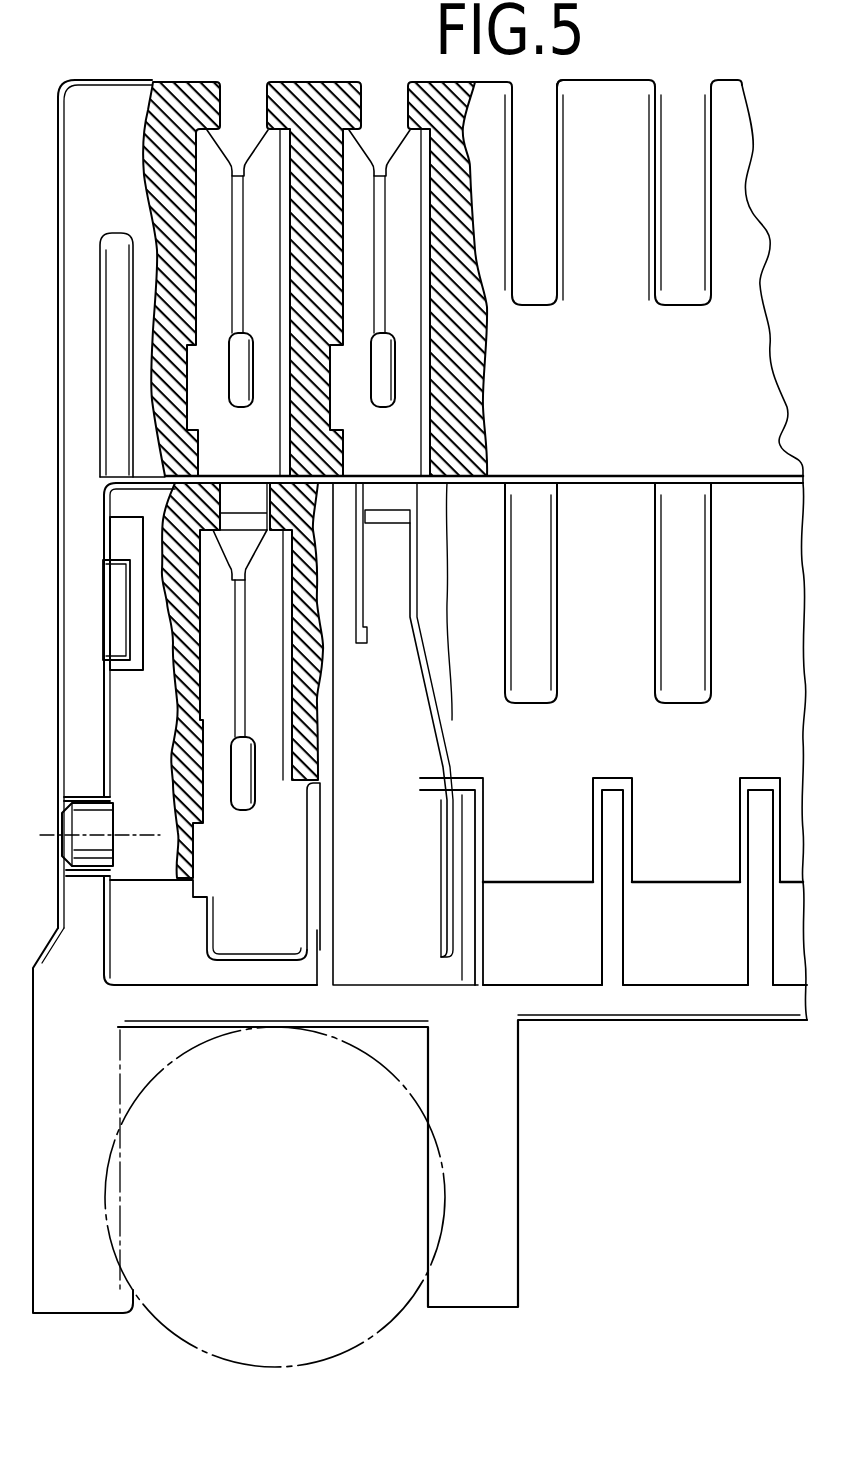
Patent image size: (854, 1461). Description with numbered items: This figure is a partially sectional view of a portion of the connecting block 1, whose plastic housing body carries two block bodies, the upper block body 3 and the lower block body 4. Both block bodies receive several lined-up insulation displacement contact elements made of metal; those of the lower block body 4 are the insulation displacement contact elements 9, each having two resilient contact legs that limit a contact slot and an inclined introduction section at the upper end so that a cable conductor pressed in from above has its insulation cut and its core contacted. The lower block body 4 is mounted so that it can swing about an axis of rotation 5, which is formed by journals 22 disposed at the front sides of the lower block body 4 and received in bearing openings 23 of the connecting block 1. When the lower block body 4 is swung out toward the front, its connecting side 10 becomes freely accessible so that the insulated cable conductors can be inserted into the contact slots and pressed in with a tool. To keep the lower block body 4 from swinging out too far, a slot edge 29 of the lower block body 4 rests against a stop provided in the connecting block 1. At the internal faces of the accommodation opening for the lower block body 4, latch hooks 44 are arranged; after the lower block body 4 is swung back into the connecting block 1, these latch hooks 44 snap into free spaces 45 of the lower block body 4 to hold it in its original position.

The connecting block 1 is at (85, 382).
The block body 3 is at (614, 97).
The lower block body 4 is at (662, 872).
The axis of rotation 5 is at (124, 843).
The insulation displacement contact element 9 is at (222, 700).
The connecting side 10 is at (174, 81).
The journal 22 is at (80, 823).
The bearing opening 23 is at (72, 797).
The slot edge 29 is at (616, 778).
The latch hook 44 is at (115, 596).
The free space 45 is at (118, 543).